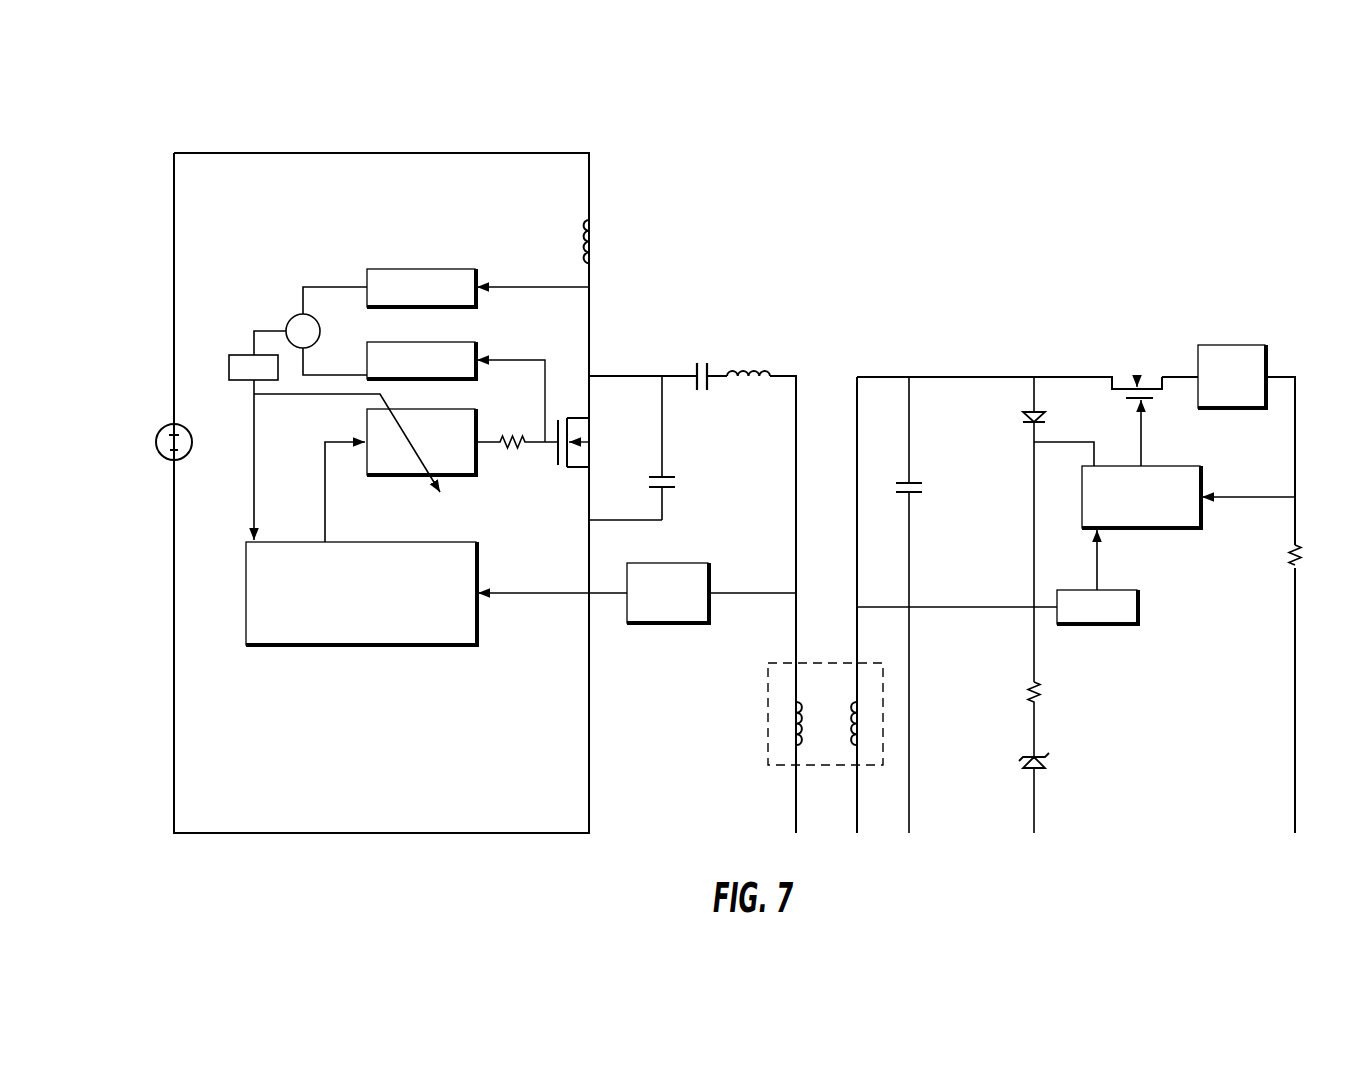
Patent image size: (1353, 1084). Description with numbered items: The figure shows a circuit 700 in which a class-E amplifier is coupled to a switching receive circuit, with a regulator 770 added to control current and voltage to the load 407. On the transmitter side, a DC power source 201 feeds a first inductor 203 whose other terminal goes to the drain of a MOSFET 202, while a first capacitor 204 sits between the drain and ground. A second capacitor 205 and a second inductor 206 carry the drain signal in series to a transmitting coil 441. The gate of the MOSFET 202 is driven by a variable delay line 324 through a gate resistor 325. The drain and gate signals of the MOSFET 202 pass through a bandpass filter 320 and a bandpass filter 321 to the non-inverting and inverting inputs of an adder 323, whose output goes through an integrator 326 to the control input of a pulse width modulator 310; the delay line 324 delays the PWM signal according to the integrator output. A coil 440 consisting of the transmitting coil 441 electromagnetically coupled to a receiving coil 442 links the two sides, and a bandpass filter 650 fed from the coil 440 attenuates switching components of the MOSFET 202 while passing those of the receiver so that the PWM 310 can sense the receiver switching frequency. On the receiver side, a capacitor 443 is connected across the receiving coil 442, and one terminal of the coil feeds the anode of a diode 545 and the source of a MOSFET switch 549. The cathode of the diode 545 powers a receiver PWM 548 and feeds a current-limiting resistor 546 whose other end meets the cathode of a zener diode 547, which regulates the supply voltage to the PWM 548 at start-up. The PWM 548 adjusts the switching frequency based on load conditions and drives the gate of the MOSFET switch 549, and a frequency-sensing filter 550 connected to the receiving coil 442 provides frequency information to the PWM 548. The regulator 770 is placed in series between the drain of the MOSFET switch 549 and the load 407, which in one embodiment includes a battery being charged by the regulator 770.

The DC power source 201 is at (158, 432).
The MOSFET 202 is at (597, 452).
The inductor L1 203 is at (593, 206).
The capacitor C1 204 is at (673, 493).
The capacitor C2 205 is at (695, 371).
The inductor L2 206 is at (782, 368).
The pulse width modulator 310 is at (261, 648).
The bandpass filter 320 is at (475, 269).
The bandpass filter 321 is at (475, 342).
The adder 323 is at (284, 311).
The variable delay line 324 is at (383, 477).
The gate resistor 325 is at (510, 455).
The integrator 326 is at (250, 354).
The load resistor 407 is at (1280, 577).
The coil 440 is at (818, 729).
The transmitting coil 441 is at (784, 711).
The receiving coil 442 is at (867, 712).
The capacitor 443 is at (921, 500).
The diode 545 is at (1022, 414).
The current-limiting resistor 546 is at (1050, 688).
The zener diode 547 is at (1058, 757).
The receiver PWM 548 is at (1173, 530).
The MOSFET switch 549 is at (1127, 360).
The frequency-sensing filter 550 is at (1137, 615).
The bandpass filter 650 is at (665, 625).
The amplifier circuit 700 is at (858, 240).
The regulator 770 is at (1250, 345).